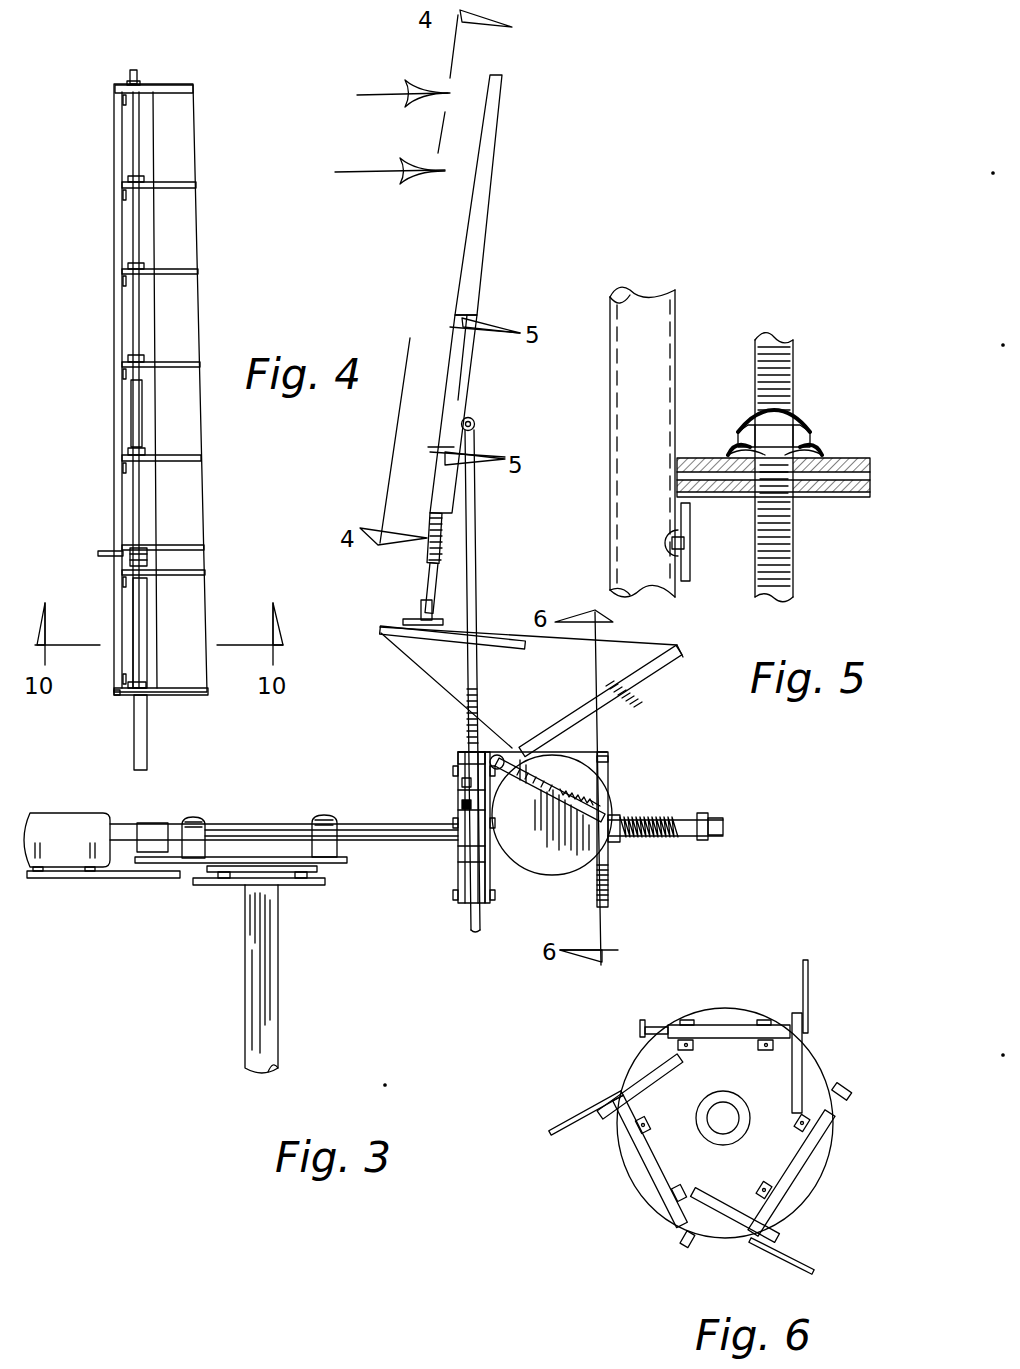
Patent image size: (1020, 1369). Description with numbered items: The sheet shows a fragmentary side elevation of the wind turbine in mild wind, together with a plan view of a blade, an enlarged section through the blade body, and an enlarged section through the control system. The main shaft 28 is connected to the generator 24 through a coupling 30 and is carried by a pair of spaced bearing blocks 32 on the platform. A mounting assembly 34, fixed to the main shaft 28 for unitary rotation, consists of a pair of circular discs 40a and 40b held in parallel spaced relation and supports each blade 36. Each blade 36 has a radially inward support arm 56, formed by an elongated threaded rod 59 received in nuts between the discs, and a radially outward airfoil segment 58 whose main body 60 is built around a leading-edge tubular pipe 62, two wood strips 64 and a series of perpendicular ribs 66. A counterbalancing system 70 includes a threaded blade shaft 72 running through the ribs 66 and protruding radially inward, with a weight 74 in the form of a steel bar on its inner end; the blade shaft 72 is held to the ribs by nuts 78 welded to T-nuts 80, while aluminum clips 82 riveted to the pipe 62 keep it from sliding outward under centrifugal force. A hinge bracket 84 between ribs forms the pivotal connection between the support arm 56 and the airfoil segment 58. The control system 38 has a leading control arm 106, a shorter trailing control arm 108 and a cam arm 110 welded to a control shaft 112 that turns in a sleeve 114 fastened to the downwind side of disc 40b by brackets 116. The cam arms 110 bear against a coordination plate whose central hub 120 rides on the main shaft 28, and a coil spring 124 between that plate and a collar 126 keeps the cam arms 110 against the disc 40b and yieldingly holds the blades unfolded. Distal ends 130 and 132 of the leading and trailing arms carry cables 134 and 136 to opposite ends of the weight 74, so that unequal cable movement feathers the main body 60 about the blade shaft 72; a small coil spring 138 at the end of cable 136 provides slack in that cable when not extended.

In FIG. 3, the generator 24 is at (44, 813).
In FIG. 3, the main shaft 28 is at (390, 830).
In FIG. 3, the coupling 30 is at (152, 823).
In FIG. 3, the bearing blocks 32 is at (318, 817).
In FIG. 3, the mounting assembly 34 is at (440, 908).
In FIG. 3, the blade 36 is at (494, 300).
In FIG. 3, the control system 38 is at (630, 800).
In FIG. 3, the circular disc 40a is at (457, 860).
In FIG. 3, the circular disc 40b is at (480, 900).
In FIG. 6, the circular disc 40b is at (815, 1070).
In FIG. 3, the support arm 56 is at (473, 543).
In FIG. 3, the airfoil segment 58 is at (497, 243).
In FIG. 3, the elongated rod 59 is at (468, 725).
In FIG. 3, the main body 60 is at (460, 393).
In FIG. 4, the tubular pipe 62 is at (113, 405).
In FIG. 5, the tubular pipe 62 is at (676, 317).
In FIG. 4, the wood strips 64 is at (180, 632).
In FIG. 4, the ribs 66 is at (190, 455).
In FIG. 5, the ribs 66 is at (838, 493).
In FIG. 3, the counterbalancing system 70 is at (405, 606).
In FIG. 3, the blade shaft 72 is at (427, 586).
In FIG. 3, the weight 74 is at (418, 640).
In FIG. 5, the nuts 78 is at (807, 427).
In FIG. 5, the T-nuts 80 is at (823, 450).
In FIG. 5, the aluminum clips 82 is at (688, 573).
In FIG. 4, the hinge bracket 84 is at (128, 553).
In FIG. 3, the leading control arm 106 is at (638, 688).
In FIG. 6, the leading control arm 106 is at (808, 975).
In FIG. 3, the trailing control arm 108 is at (565, 798).
In FIG. 6, the trailing control arm 108 is at (640, 1027).
In FIG. 3, the cam arm 110 is at (565, 873).
In FIG. 6, the cam arm 110 is at (800, 1050).
In FIG. 3, the control shaft 112 is at (483, 748).
In FIG. 3, the sleeve 114 is at (502, 757).
In FIG. 6, the sleeve 114 is at (742, 1022).
In FIG. 6, the brackets 116 is at (767, 1052).
In FIG. 3, the central hub 120 is at (620, 842).
In FIG. 3, the coil spring 124 is at (670, 837).
In FIG. 3, the collar 126 is at (703, 843).
In FIG. 3, the distal end of leading control arm 130 is at (684, 662).
In FIG. 3, the distal end of trailing control arm 132 is at (610, 793).
In FIG. 3, the cable 134 is at (608, 650).
In FIG. 3, the cable 136 is at (438, 682).
In FIG. 3, the small coil spring 138 is at (612, 752).